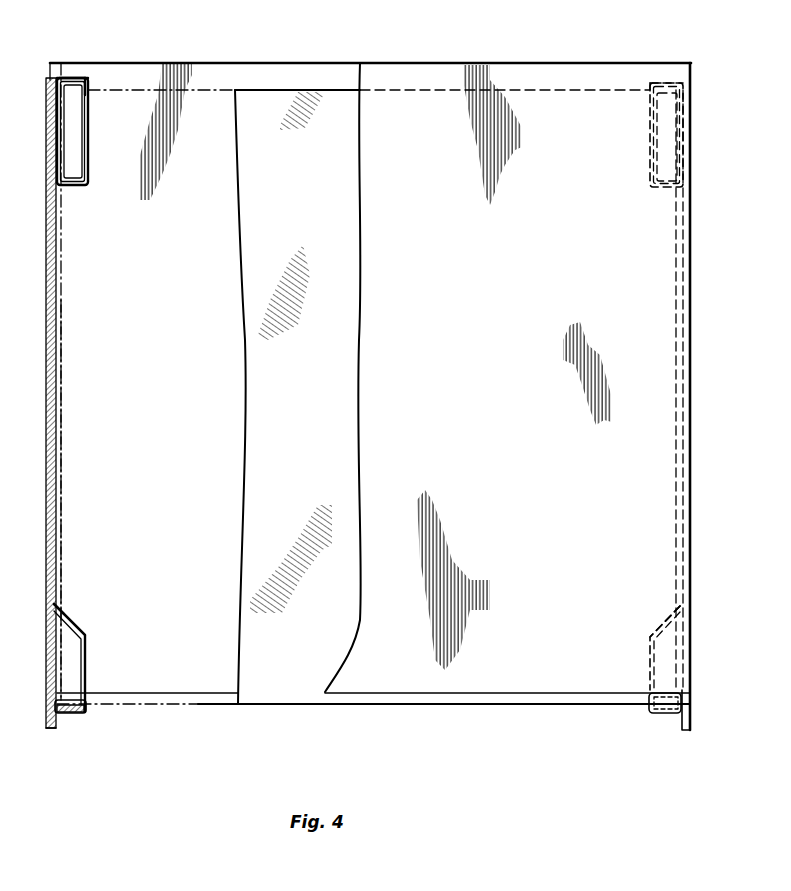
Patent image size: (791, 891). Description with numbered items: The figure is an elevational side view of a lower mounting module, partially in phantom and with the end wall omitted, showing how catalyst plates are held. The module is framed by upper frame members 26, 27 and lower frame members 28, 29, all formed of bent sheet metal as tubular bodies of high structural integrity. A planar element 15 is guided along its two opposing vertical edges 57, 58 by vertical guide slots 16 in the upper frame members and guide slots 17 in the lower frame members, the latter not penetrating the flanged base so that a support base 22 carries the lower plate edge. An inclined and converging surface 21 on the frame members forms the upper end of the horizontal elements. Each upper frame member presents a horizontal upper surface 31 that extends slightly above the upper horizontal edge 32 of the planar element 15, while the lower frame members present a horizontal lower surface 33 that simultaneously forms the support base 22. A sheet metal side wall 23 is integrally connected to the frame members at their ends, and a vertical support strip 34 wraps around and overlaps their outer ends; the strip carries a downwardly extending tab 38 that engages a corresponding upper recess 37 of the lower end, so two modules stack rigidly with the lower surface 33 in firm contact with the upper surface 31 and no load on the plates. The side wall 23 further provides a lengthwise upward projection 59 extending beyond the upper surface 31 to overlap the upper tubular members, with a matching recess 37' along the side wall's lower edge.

The planar element 15 is at (258, 440).
The vertical guide slot 16 is at (88, 145).
The guide slot 17 is at (85, 656).
The inclined and converging surface 21 is at (78, 622).
The support base 22 is at (70, 698).
The side wall 23 is at (243, 73).
The upper frame member 26 is at (86, 76).
The upper frame member 27 is at (649, 82).
The lower frame member 28 is at (67, 607).
The lower frame member 29 is at (668, 611).
The horizontal upper surface 31 is at (70, 78).
The upper horizontal edge 32 is at (217, 90).
The horizontal lower surface 33 is at (70, 715).
The vertical support strip 34 is at (48, 473).
The upper recess 37 is at (366, 372).
The recess 37' is at (373, 724).
The downwardly extending tab 38 is at (50, 728).
The vertical edge 57 is at (62, 523).
The vertical edge 58 is at (676, 448).
The upward projection 59 is at (375, 75).